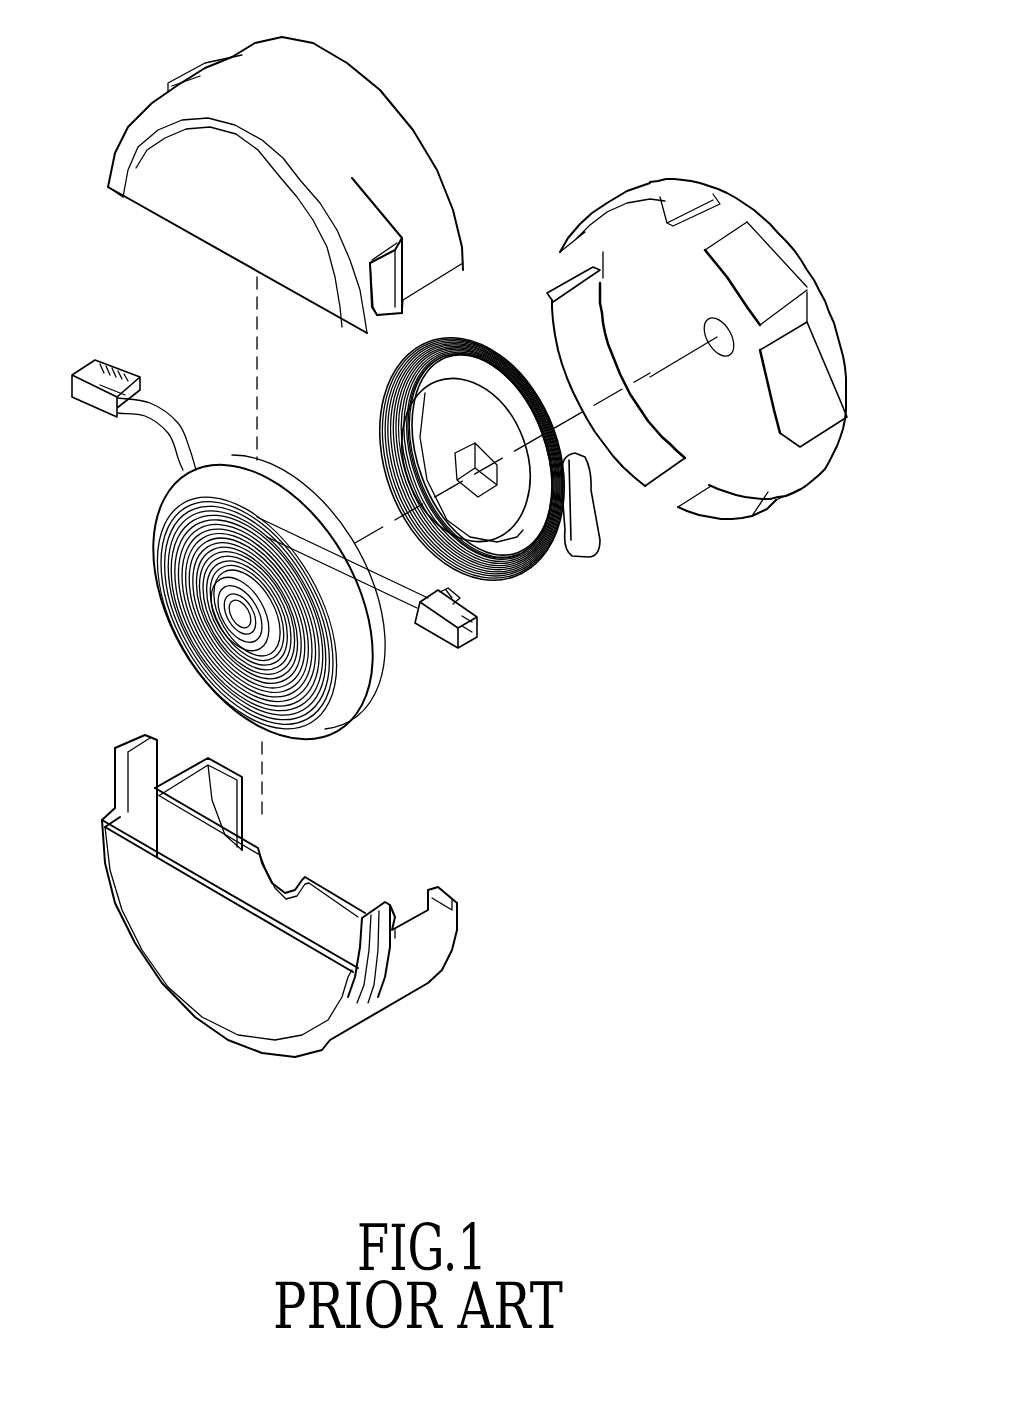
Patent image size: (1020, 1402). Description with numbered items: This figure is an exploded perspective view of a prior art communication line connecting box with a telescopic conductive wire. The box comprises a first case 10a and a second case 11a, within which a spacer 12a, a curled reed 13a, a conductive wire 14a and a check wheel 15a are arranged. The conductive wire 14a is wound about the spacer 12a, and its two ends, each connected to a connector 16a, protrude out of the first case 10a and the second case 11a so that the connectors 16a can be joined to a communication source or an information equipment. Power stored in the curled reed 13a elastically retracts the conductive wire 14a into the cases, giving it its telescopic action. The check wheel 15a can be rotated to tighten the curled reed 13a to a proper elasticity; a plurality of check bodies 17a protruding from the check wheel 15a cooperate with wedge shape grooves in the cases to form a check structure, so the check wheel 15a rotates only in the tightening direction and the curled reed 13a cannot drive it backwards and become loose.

The first case 10a is at (352, 87).
The second case 11a is at (405, 983).
The spacer 12a is at (350, 712).
The curled reed 13a is at (480, 357).
The conductive wire 14a is at (177, 578).
The check wheel 15a is at (793, 247).
The connector 16a is at (93, 400).
The check body 17a is at (838, 418).